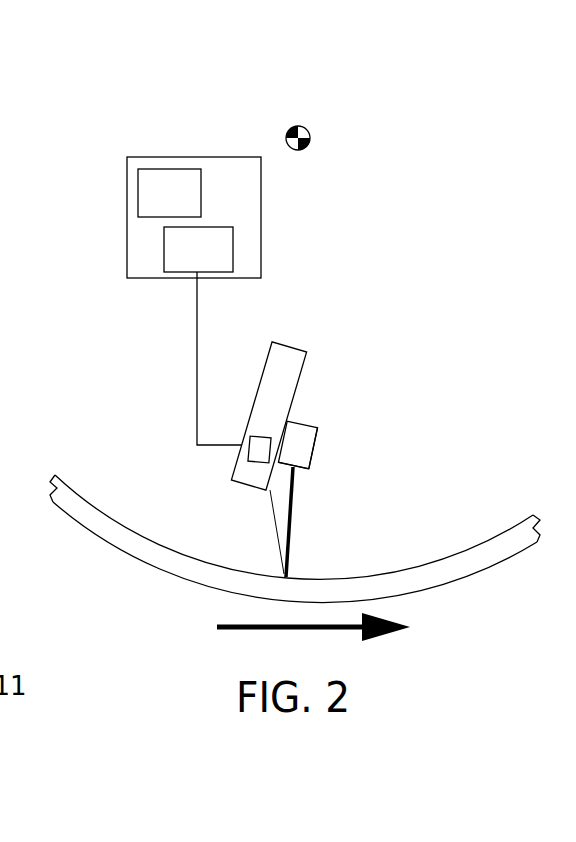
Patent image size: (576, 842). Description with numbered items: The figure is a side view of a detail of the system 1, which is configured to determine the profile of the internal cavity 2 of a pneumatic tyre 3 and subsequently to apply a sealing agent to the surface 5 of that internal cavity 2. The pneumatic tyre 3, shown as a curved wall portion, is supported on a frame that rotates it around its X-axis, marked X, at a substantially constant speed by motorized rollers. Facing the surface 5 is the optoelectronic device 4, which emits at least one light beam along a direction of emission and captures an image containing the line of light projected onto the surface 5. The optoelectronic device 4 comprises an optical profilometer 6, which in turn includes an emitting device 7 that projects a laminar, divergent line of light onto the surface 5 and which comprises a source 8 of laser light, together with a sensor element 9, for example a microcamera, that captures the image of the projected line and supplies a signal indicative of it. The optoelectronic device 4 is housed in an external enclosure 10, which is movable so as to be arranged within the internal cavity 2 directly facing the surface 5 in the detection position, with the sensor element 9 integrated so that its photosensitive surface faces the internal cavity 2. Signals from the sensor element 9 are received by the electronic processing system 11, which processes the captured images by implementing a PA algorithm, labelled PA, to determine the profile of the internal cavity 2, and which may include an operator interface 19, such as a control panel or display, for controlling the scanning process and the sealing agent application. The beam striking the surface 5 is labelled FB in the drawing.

The system 1 is at (389, 257).
The internal cavity 2 is at (140, 440).
The pneumatic tyre 3 is at (108, 540).
The optoelectronic device 4 is at (364, 399).
The surface 5 is at (81, 488).
The optical profilometer 6 is at (334, 446).
The emitting device 7 is at (316, 453).
The source of laser light 8 is at (297, 424).
The sensor element 9 is at (255, 453).
The external enclosure 10 is at (290, 350).
The electronic processing system 11 is at (148, 146).
The operator interface 19 is at (169, 193).
The PA algorithm PA is at (198, 249).
The X-axis X is at (310, 143).
The laser beam FB is at (293, 540).